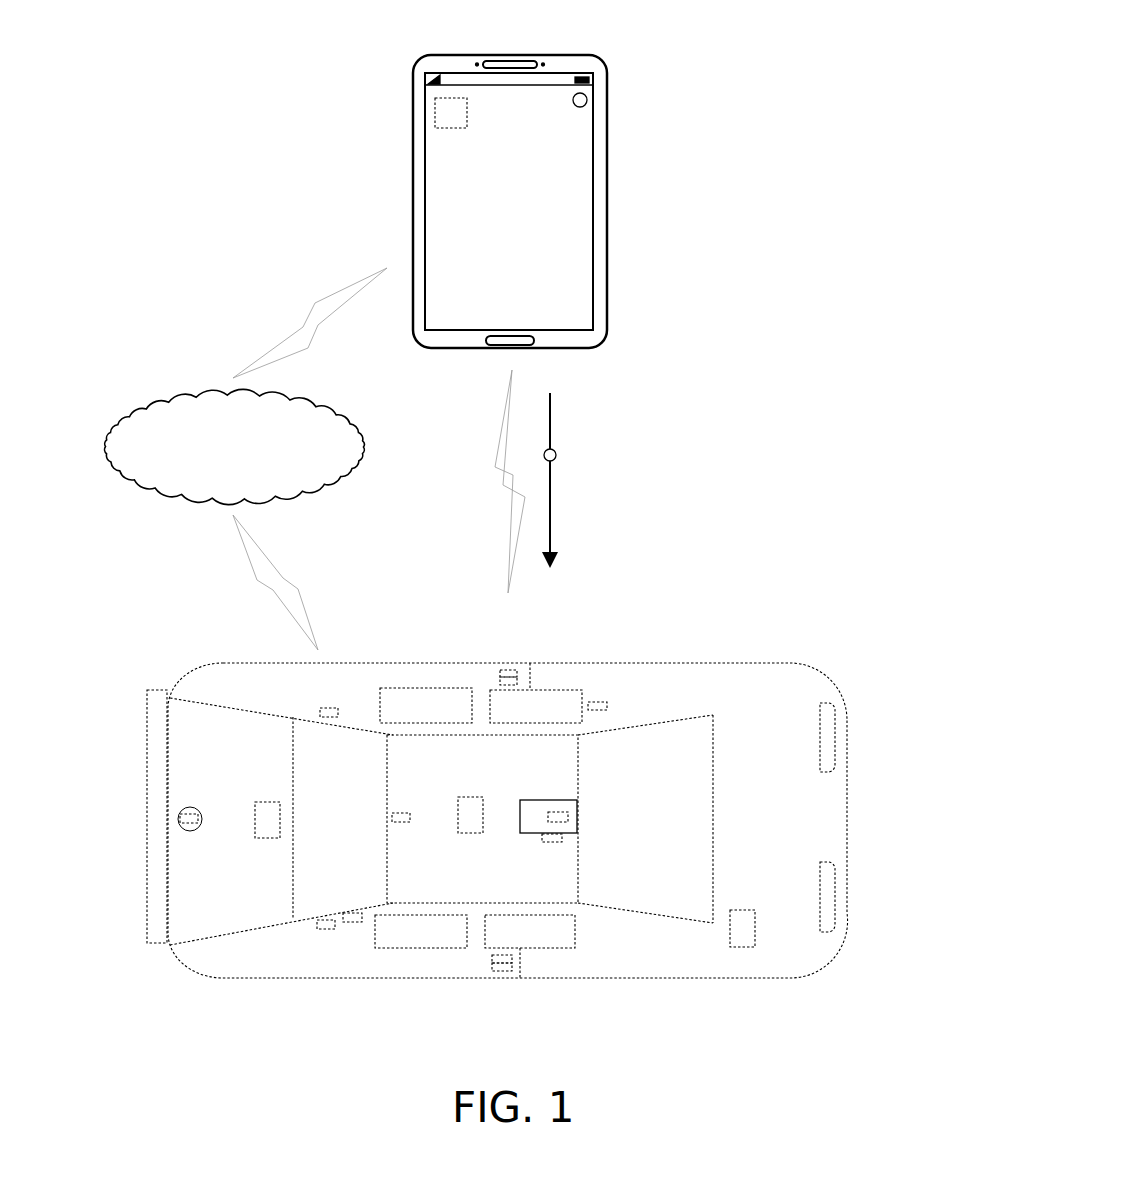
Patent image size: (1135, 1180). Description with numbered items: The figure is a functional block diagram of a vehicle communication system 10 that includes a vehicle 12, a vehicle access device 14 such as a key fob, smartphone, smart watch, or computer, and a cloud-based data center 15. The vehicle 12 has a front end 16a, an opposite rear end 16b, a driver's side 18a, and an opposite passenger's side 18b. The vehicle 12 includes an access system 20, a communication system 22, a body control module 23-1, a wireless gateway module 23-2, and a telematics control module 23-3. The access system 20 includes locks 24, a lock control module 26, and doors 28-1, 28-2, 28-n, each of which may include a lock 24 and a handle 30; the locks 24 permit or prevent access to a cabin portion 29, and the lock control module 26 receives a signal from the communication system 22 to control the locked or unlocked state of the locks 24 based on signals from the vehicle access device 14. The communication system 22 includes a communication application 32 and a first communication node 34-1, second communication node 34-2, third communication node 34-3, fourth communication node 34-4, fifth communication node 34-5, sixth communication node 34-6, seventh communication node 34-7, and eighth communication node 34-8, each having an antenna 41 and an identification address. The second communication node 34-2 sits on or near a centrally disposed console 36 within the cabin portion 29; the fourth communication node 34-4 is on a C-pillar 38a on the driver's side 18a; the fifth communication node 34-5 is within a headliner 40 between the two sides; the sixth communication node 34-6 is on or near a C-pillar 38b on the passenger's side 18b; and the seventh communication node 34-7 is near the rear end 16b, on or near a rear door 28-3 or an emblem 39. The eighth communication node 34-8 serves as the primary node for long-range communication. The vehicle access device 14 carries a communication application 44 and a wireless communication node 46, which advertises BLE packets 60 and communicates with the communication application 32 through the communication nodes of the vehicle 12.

The vehicle communication system 10 is at (773, 38).
The vehicle 12 is at (765, 640).
The vehicle access device 14 is at (615, 38).
The cloud-based data center 15 is at (355, 410).
The front end 16a is at (848, 753).
The rear end 16b is at (148, 716).
The driver's side 18a is at (338, 662).
The passenger's side 18b is at (300, 980).
The access system 20 is at (597, 676).
The communication system 22 is at (604, 816).
The body control module 23-1 is at (755, 928).
The wireless gateway module 23-2 is at (470, 797).
The telematics control module 23-3 is at (268, 802).
The lock 24 is at (524, 668).
The lock control module 26 is at (607, 706).
The door 28-1 is at (532, 670).
The door 28-2 is at (535, 970).
The rear door 28-3 is at (197, 895).
The door 28-n is at (396, 970).
The cabin portion 29 is at (557, 871).
The handle 30 is at (502, 672).
The communication application 32 is at (562, 838).
The first communication node 34-1 is at (497, 680).
The second communication node 34-2 is at (568, 815).
The third communication node 34-3 is at (492, 965).
The fourth communication node 34-4 is at (320, 710).
The fifth communication node 34-5 is at (400, 812).
The sixth communication node 34-6 is at (318, 927).
The seventh communication node 34-7 is at (195, 808).
The eighth communication node 34-8 is at (353, 923).
The console 36 is at (523, 813).
The C-pillar 38a is at (377, 728).
The C-pillar 38b is at (366, 905).
The emblem 39 is at (202, 830).
The headliner 40 is at (393, 810).
The antenna 41 is at (333, 717).
The communication application 44 is at (467, 112).
The wireless communication node 46 is at (578, 108).
The BLE packets 60 is at (556, 452).